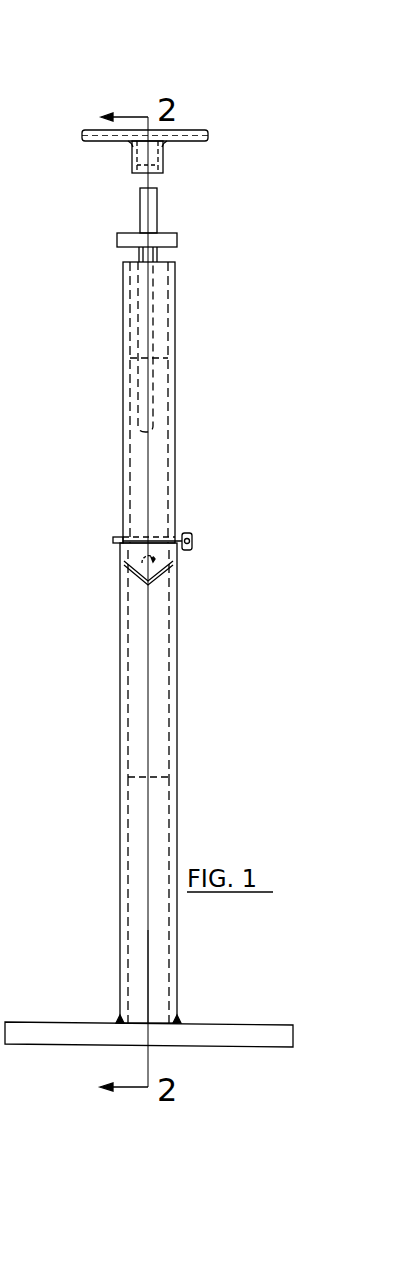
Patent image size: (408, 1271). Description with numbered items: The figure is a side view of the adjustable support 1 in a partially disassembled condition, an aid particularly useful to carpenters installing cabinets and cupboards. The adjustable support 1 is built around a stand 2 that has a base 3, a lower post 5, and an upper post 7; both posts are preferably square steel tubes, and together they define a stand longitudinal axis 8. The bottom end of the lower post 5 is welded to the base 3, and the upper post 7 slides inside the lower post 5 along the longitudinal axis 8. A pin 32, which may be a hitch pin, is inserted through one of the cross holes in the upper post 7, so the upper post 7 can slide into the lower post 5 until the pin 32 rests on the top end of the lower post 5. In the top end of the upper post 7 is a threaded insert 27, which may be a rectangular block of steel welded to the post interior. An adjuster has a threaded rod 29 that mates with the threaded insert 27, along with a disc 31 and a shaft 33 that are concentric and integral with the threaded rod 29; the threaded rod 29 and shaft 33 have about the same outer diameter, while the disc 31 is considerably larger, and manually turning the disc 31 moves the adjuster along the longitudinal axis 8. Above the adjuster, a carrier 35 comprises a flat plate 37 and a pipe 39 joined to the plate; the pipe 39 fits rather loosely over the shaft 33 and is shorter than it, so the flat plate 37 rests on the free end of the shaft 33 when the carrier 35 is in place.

The adjustable support 1 is at (178, 965).
The stand 2 is at (182, 636).
The base 3 is at (220, 1040).
The lower post 5 is at (163, 800).
The upper post 7 is at (157, 482).
The stand longitudinal axis 8 is at (148, 1002).
The threaded insert 27 is at (165, 358).
The threaded rod 29 is at (154, 253).
The disc 31 is at (123, 242).
The pin 32 is at (192, 538).
The shaft 33 is at (156, 212).
The carrier 35 is at (212, 136).
The flat plate 37 is at (188, 131).
The pipe 39 is at (143, 158).